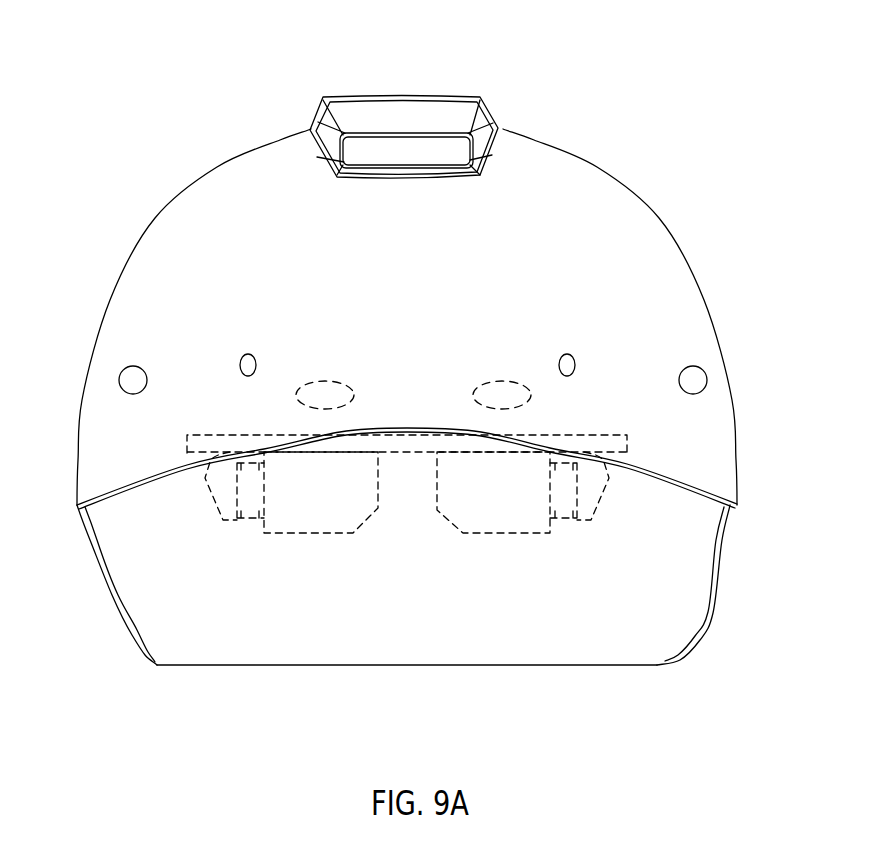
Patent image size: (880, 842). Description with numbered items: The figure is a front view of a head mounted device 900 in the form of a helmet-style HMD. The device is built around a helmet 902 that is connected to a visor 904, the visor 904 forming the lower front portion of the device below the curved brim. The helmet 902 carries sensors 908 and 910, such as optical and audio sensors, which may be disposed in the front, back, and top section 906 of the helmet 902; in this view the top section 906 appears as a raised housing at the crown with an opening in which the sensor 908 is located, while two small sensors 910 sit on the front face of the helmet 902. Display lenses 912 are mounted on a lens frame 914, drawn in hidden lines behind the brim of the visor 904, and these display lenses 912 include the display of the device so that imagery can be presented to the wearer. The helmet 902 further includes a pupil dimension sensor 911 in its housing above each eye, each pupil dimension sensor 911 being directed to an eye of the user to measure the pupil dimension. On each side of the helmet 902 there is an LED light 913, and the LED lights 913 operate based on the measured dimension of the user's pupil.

The head mounted device 900 is at (165, 40).
The helmet 902 is at (590, 164).
The visor 904 is at (548, 650).
The top section 906 is at (407, 97).
The sensors 908 is at (358, 157).
The sensors 910 is at (248, 353).
The pupil dimension sensor 911 is at (327, 381).
The display lenses 912 is at (303, 553).
The LED lights 913 is at (126, 366).
The lens frame 914 is at (207, 495).